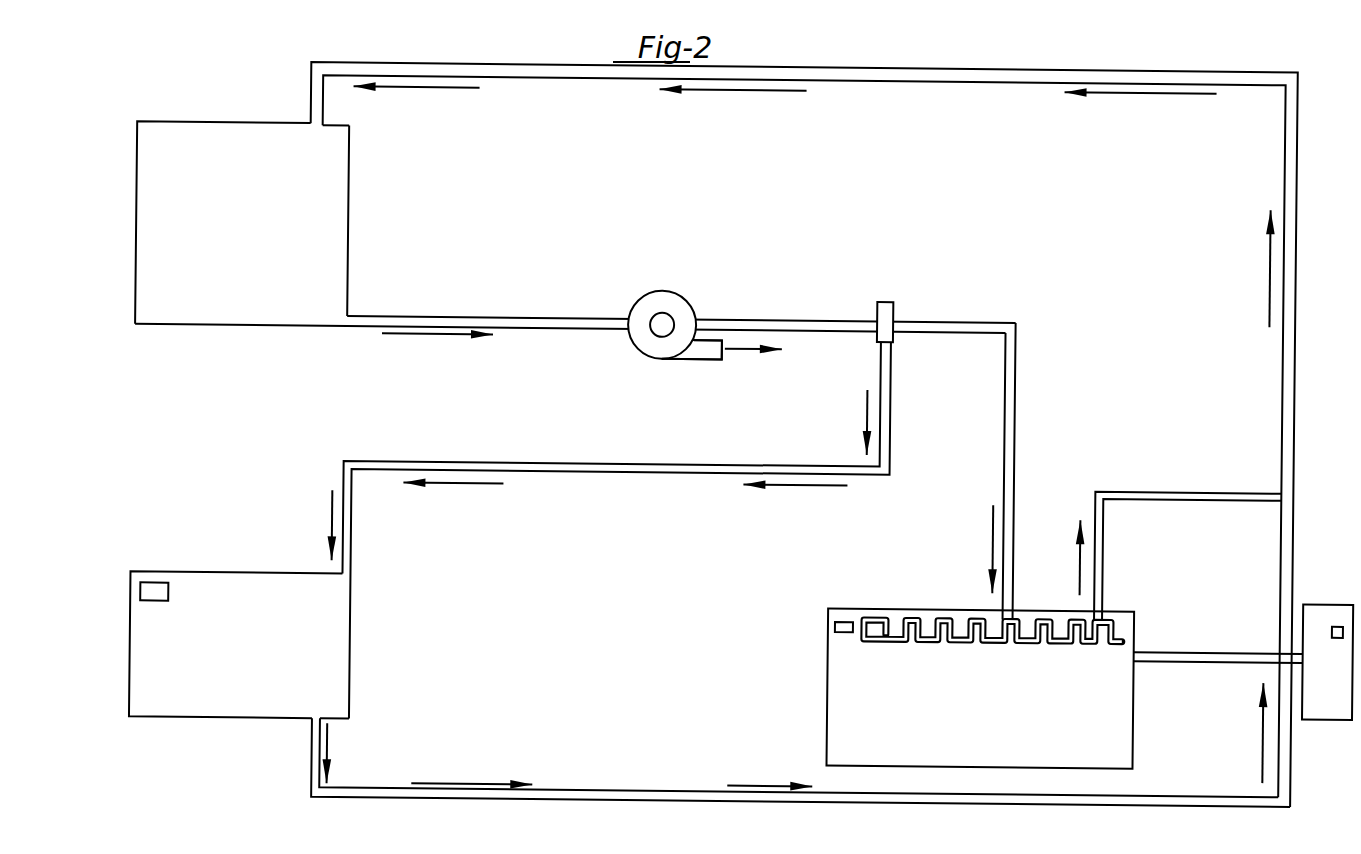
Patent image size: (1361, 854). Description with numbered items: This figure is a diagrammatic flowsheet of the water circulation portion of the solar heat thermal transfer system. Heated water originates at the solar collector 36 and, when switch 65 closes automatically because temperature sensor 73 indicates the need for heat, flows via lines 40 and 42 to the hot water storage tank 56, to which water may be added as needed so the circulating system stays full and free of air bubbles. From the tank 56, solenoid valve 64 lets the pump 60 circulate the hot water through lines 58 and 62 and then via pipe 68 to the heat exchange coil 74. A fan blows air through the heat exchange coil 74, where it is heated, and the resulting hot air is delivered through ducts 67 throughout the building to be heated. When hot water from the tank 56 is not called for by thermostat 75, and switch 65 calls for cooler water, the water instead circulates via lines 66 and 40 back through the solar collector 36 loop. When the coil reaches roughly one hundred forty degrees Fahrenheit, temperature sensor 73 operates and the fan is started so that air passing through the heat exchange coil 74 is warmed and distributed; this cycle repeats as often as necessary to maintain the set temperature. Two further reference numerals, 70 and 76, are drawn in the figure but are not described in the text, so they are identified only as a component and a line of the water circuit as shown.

The solar collector 36 is at (132, 656).
The line 40 is at (411, 799).
The line 42 is at (1295, 246).
The hot water storage tank 56 is at (147, 331).
The line 58 is at (559, 330).
The pump 60 is at (667, 359).
The line 62 is at (857, 327).
The solenoid valve 64 is at (892, 308).
The switch 65 is at (142, 601).
The line 66 is at (641, 473).
The ducts 67 is at (1185, 648).
The pipe 68 is at (1015, 428).
The central air unit 70 is at (830, 726).
The temperature sensor 73 is at (837, 626).
The heat exchange coil 74 is at (1114, 612).
The thermostat 75 is at (1340, 620).
The conduit from heat exchanger coil 76 is at (1096, 488).